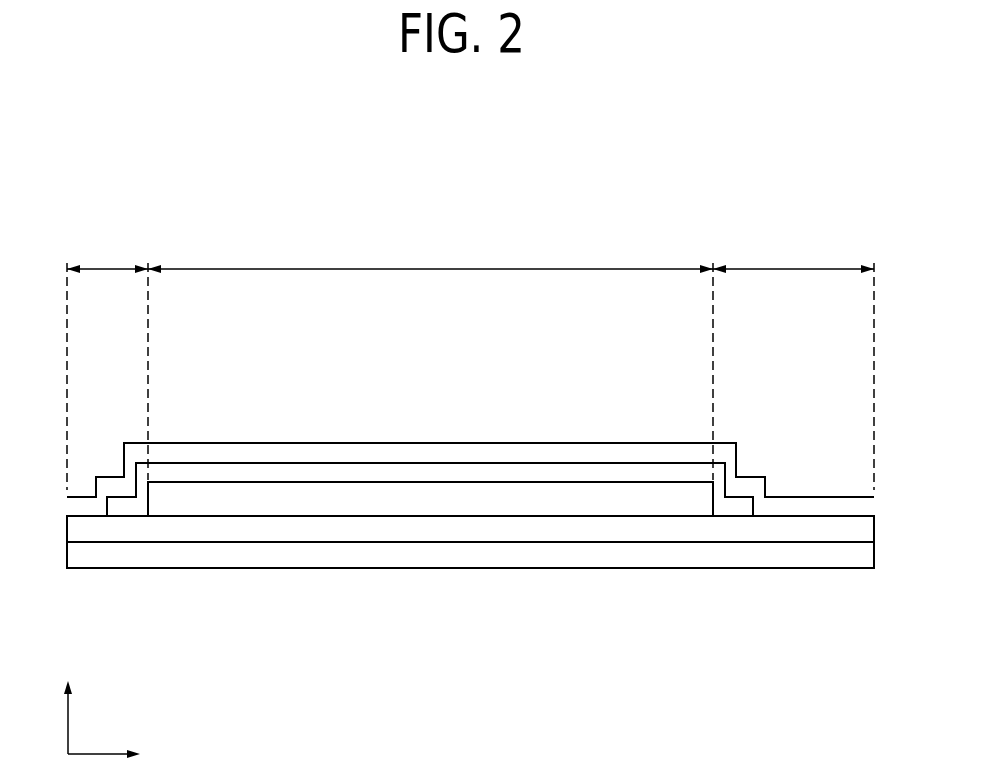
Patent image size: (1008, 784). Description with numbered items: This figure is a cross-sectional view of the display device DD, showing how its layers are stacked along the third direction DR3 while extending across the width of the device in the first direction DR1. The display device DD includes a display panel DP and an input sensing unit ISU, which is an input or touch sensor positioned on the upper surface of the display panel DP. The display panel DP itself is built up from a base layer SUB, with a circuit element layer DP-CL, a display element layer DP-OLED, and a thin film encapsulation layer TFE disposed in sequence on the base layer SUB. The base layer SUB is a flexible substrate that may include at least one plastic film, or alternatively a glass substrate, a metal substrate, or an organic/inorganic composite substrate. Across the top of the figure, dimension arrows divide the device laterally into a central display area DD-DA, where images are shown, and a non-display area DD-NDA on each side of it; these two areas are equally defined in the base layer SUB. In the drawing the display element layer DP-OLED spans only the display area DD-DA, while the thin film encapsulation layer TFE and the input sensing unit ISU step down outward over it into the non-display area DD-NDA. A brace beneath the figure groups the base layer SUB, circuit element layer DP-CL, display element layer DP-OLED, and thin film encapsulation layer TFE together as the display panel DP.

The display device DD is at (766, 168).
The non-display area DD-NDA is at (469, 362).
The display area DD-DA is at (430, 357).
The input sensing unit ISU is at (438, 448).
The display panel DP is at (592, 653).
The thin film encapsulation layer TFE is at (565, 473).
The display element layer DP-OLED is at (470, 505).
The circuit element layer DP-CL is at (362, 535).
The base layer SUB is at (283, 560).
The first direction DR1 is at (125, 756).
The third direction DR3 is at (67, 702).